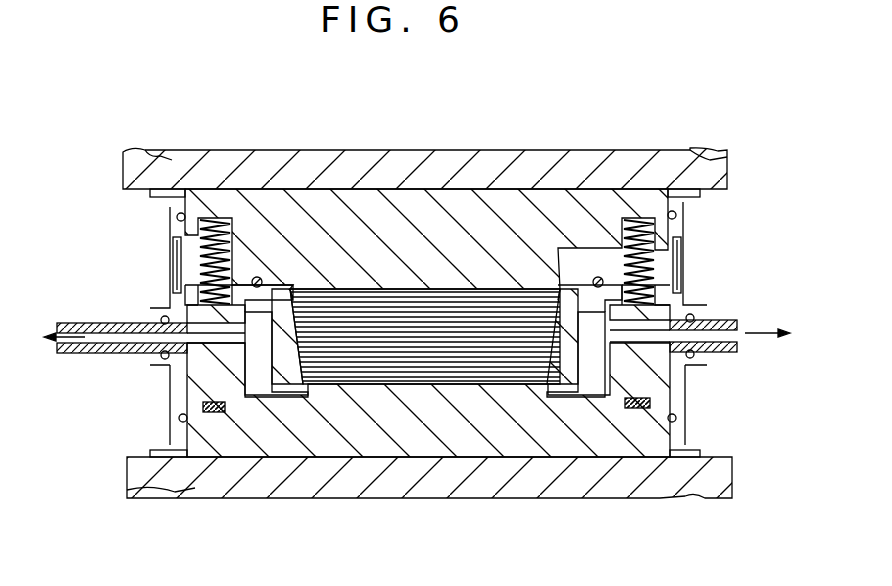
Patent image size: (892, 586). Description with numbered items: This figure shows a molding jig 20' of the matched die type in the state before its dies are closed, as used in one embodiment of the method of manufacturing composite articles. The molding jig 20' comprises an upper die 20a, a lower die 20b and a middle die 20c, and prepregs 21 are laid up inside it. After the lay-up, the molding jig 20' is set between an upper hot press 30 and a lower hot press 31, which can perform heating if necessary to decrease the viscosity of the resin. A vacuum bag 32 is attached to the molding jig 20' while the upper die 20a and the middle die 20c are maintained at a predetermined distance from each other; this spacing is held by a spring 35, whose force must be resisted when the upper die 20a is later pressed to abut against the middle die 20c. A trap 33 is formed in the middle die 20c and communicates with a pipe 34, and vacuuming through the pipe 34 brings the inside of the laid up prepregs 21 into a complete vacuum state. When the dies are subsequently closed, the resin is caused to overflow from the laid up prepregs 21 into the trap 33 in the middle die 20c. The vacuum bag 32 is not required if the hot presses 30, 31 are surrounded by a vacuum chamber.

The molding jig 20' is at (428, 426).
The upper die 20a is at (497, 198).
The lower die 20b is at (451, 440).
The middle die 20c is at (657, 379).
The prepregs 21 is at (512, 420).
The upper hot press 30 is at (128, 176).
The lower hot press 31 is at (130, 482).
The vacuum bag 32 is at (687, 277).
The trap 33 is at (175, 278).
The pipe 34 is at (727, 323).
The spring 35 is at (187, 230).